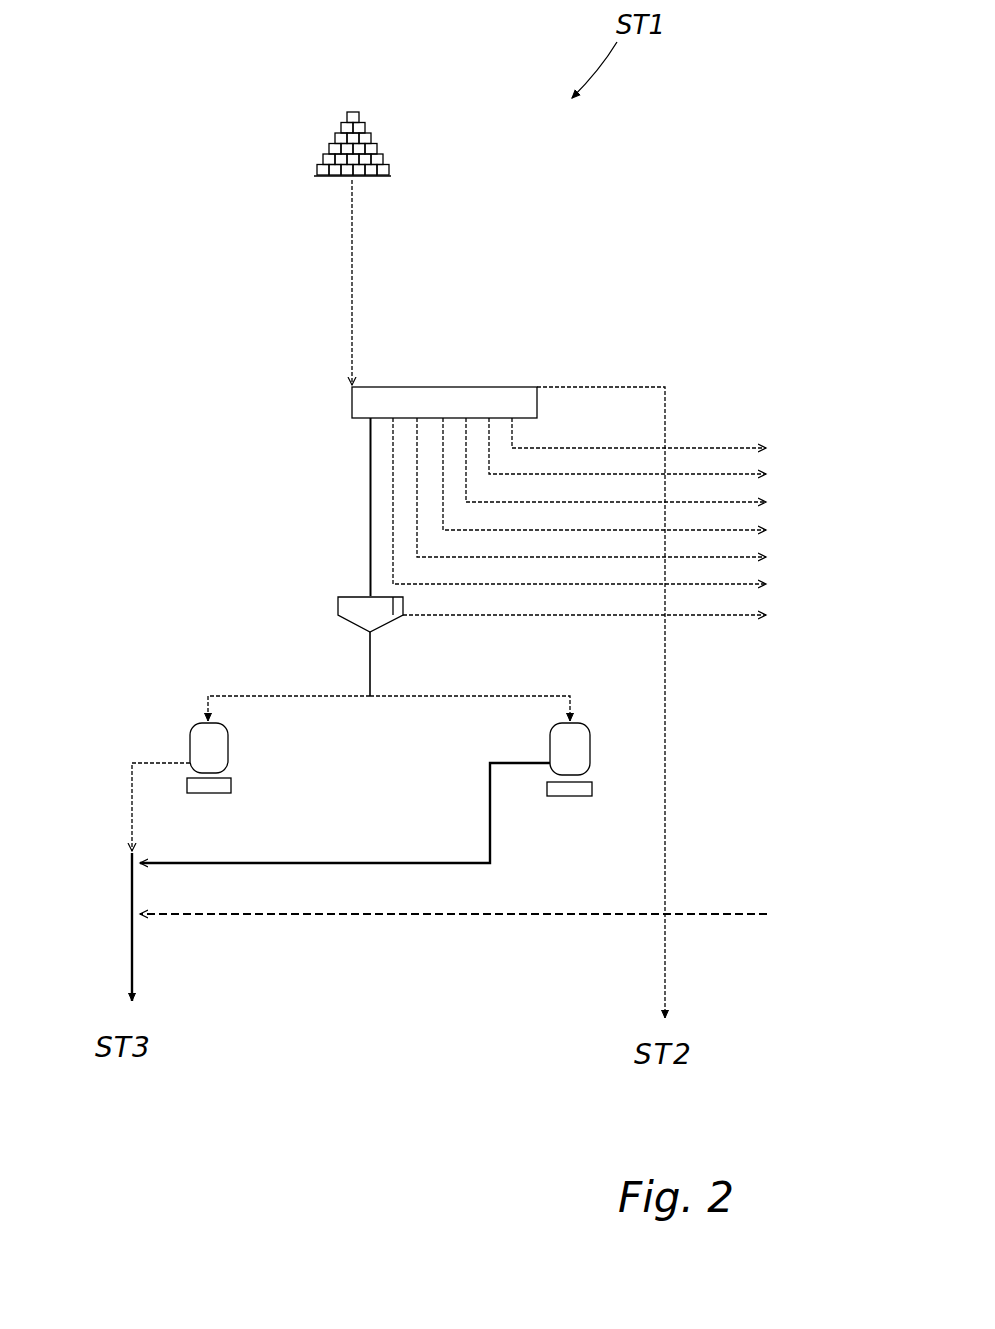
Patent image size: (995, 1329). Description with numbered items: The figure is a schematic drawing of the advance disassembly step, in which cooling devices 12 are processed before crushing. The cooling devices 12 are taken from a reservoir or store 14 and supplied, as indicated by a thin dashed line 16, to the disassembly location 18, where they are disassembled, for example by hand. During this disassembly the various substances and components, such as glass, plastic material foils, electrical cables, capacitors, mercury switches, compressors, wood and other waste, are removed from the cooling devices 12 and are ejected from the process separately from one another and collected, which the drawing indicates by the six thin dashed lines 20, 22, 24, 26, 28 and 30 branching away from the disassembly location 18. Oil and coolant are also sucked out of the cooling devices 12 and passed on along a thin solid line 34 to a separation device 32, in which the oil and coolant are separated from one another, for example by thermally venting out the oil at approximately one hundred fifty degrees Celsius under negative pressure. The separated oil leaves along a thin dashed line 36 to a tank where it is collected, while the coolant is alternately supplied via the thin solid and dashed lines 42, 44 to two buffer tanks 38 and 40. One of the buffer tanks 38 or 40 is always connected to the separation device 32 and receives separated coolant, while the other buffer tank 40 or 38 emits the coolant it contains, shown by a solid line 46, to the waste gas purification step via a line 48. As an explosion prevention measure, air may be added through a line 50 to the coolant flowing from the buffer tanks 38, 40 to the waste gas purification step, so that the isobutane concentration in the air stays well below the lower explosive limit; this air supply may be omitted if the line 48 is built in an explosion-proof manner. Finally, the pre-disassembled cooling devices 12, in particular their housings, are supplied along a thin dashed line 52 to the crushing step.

The cooling devices 12 is at (360, 112).
The reservoir or store 14 is at (275, 84).
The thin dashed line 16 is at (355, 278).
The disassembly location 18 is at (432, 400).
The thin dashed line 20 is at (662, 441).
The thin dashed line 22 is at (664, 455).
The thin dashed line 24 is at (637, 469).
The thin dashed line 26 is at (639, 483).
The thin dashed line 28 is at (612, 496).
The thin dashed line 30 is at (613, 510).
The separation device 32 is at (337, 606).
The thin solid line 34 is at (369, 505).
The thin dashed line 36 is at (605, 620).
The buffer tank 38 is at (228, 762).
The buffer tank 40 is at (588, 762).
The thin solid and dashed line 42 is at (293, 697).
The thin solid and dashed line 44 is at (452, 697).
The solid line 46 is at (372, 858).
The line 48 is at (129, 945).
The line 50 is at (443, 917).
The thin dashed line 52 is at (666, 772).